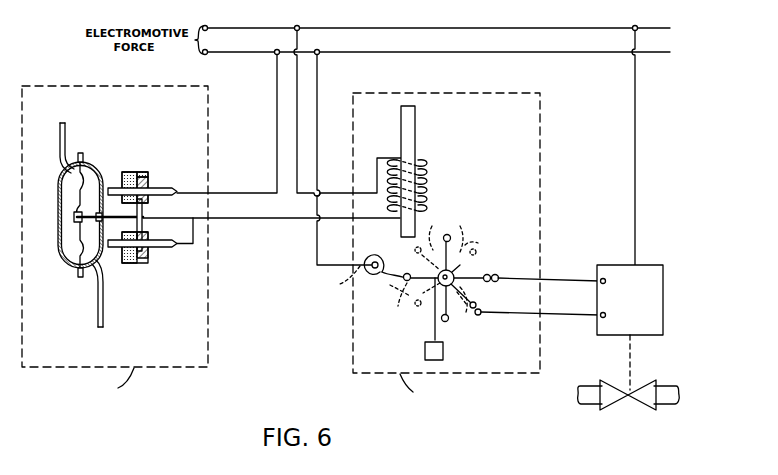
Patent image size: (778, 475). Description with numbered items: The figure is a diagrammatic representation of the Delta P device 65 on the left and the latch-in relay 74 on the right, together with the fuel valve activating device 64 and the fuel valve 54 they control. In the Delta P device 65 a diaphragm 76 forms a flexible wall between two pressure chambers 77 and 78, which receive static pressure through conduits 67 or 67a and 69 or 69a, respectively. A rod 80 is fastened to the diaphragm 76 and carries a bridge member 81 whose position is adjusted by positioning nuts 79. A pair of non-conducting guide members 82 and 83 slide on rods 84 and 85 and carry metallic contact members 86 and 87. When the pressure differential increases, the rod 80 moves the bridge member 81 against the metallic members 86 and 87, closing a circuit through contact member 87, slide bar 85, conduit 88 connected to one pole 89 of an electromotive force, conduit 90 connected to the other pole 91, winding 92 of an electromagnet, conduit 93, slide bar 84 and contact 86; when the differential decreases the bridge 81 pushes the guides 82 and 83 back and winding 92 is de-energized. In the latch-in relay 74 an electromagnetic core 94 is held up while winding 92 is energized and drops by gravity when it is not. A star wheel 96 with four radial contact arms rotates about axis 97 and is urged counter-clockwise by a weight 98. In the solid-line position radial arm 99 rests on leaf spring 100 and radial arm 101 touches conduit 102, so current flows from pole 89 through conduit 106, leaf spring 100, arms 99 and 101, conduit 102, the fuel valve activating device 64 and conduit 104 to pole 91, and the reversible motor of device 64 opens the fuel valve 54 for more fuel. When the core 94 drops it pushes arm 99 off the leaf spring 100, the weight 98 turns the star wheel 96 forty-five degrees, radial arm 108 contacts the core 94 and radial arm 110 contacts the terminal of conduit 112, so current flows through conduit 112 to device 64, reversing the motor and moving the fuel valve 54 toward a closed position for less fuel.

The fuel valve 54 is at (639, 412).
The fuel valve activating device 64 is at (663, 315).
The Delta P device 65 is at (188, 368).
The conduit 67 is at (64, 134).
The conduit 67a is at (56, 130).
The conduit 69 is at (83, 309).
The conduit 69a is at (97, 316).
The latch-in relay 74 is at (521, 368).
The diaphragm 76 is at (61, 238).
The pressure chamber 77 is at (74, 264).
The pressure chamber 78 is at (89, 175).
The positioning nuts 79 is at (146, 223).
The rod 80 is at (75, 210).
The bridge member 81 is at (145, 211).
The guide member 82 is at (124, 264).
The guide member 83 is at (122, 178).
The slide bar 84 is at (165, 250).
The slide bar 85 is at (162, 186).
The metallic contact member 86 is at (150, 264).
The metallic contact member 87 is at (141, 176).
The conduit 88 is at (275, 137).
The pole of electromotive force 89 is at (436, 54).
The conduit 90 is at (298, 85).
The pole of electromotive force 91 is at (452, 30).
The winding 92 is at (420, 174).
The conduit 93 is at (263, 220).
The electromagnetic core 94 is at (416, 129).
The star wheel 96 is at (458, 266).
The axis 97 is at (453, 282).
The weight 98 is at (424, 350).
The radial arm 99 is at (408, 298).
The leaf spring 100 is at (348, 283).
The radial arm 101 is at (462, 265).
The conduit 102 is at (577, 281).
The conduit 104 is at (635, 192).
The conduit 106 is at (318, 156).
The radial arm 108 is at (441, 231).
The radial arm 110 is at (452, 314).
The conduit 112 is at (585, 318).